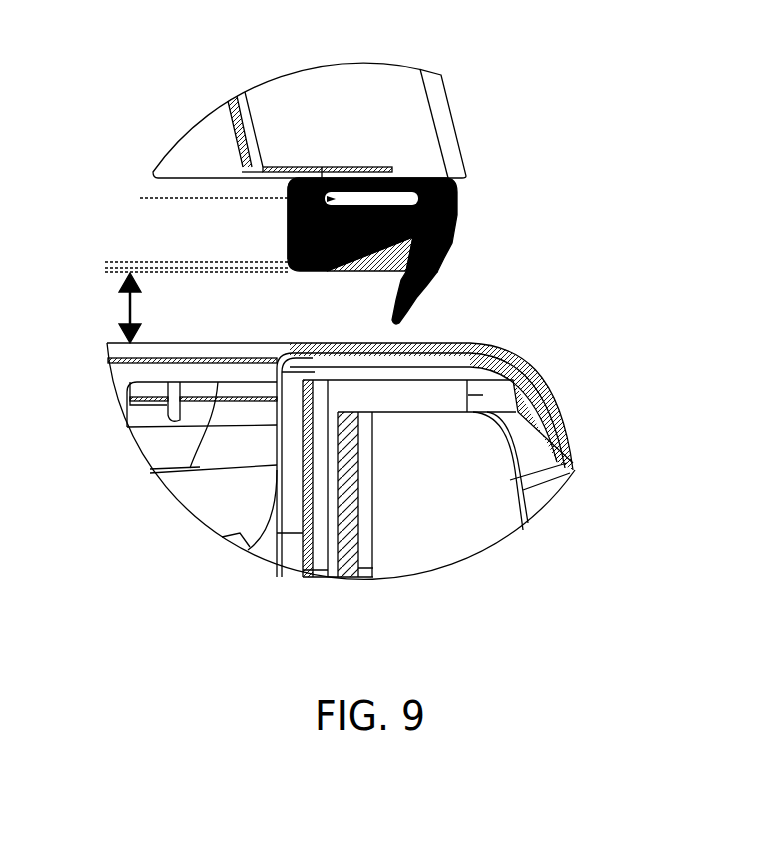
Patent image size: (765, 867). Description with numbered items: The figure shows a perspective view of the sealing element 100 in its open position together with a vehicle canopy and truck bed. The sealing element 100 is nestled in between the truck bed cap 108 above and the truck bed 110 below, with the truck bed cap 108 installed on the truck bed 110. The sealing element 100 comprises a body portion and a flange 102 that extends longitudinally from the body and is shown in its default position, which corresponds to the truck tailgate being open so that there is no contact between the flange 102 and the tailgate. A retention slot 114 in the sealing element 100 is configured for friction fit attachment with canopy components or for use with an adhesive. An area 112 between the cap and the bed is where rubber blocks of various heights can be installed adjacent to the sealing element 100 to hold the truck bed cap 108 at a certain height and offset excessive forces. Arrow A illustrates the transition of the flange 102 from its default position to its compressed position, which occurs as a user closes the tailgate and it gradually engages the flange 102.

The sealing element 100 is at (400, 238).
The flange 102 is at (423, 288).
The truck bed cap 108 is at (447, 77).
The truck bed 110 is at (577, 444).
The area 112 is at (115, 309).
The retention slot 114 is at (288, 218).
The arrow A is at (338, 282).